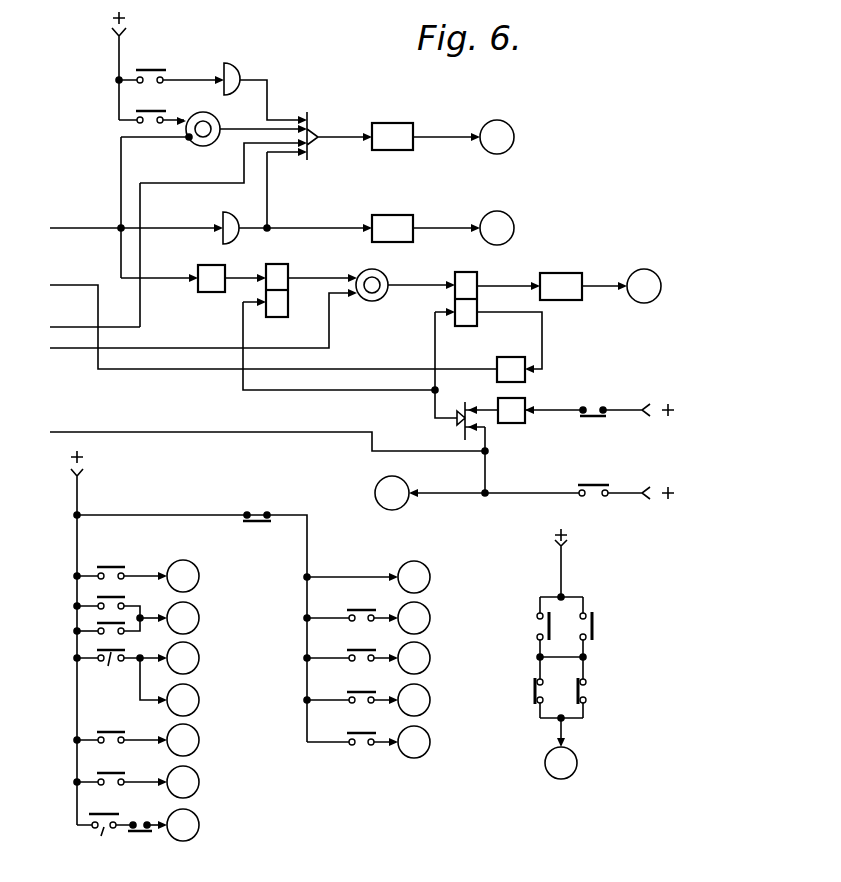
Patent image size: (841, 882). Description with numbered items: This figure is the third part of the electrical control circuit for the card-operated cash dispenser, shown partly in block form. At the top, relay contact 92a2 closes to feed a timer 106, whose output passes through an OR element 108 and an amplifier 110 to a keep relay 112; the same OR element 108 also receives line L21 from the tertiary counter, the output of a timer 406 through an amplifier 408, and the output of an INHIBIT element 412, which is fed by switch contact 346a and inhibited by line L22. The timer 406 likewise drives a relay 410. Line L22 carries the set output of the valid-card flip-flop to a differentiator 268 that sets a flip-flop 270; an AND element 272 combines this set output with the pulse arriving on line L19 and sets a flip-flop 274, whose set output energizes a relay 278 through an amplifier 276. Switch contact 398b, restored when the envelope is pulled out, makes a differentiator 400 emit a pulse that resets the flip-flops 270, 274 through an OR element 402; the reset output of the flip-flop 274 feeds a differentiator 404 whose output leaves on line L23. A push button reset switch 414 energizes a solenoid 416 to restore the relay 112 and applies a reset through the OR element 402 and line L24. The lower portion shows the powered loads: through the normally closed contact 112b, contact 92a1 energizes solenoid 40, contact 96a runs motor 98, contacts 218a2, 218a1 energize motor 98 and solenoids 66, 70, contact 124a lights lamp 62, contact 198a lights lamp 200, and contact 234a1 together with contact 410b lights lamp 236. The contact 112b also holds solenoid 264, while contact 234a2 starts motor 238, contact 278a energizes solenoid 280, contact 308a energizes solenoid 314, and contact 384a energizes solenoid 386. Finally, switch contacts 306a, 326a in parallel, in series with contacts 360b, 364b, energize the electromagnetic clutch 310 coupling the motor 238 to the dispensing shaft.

The relay contact 92a2 is at (187, 52).
The timer 106 is at (240, 65).
The switch contact 346a is at (174, 100).
The INHIBIT element 412 is at (197, 144).
The OR element 108 is at (316, 128).
The amplifier 110 is at (413, 123).
The keep relay 112 is at (510, 125).
The line L22 is at (77, 218).
The timer 406 is at (226, 213).
The amplifier 408 is at (418, 205).
The relay 410 is at (510, 216).
The line L23 is at (76, 281).
The differentiator 268 is at (208, 265).
The flip-flop 270 is at (288, 270).
The line L19 is at (77, 350).
The line L21 is at (74, 321).
The AND element 272 is at (384, 273).
The flip-flop 274 is at (477, 272).
The amplifier 276 is at (580, 273).
The relay 278 is at (656, 272).
The differentiator 404 is at (518, 349).
The OR element 402 is at (462, 426).
The differentiator 400 is at (510, 423).
The switch contact 398b is at (590, 406).
The line L24 is at (86, 415).
The solenoid 416 is at (375, 493).
The push button reset switch 414 is at (607, 488).
The relay contact 112b is at (273, 496).
The relay contact 92a1 is at (150, 554).
The solenoid 40 is at (199, 571).
The relay contact 96a is at (125, 595).
The motor 98 is at (199, 612).
The relay contact 218a2 is at (112, 631).
The relay contact 218a1 is at (119, 676).
The solenoid 66 is at (199, 658).
The solenoid 70 is at (199, 700).
The relay contact 124a is at (140, 718).
The lamp 62 is at (199, 740).
The relay contact 198a is at (135, 772).
The lamp 200 is at (199, 781).
The relay contact 234a1 is at (116, 841).
The relay contact 410b is at (142, 818).
The lamp 236 is at (199, 825).
The solenoid 264 is at (427, 565).
The relay contact 234a2 is at (393, 598).
The motor 238 is at (430, 618).
The relay contact 278a is at (375, 654).
The solenoid 280 is at (430, 658).
The switch contact 308a is at (378, 684).
The solenoid 314 is at (430, 700).
The switch contact 384a is at (375, 738).
The solenoid 386 is at (430, 742).
The switch contact 306a is at (540, 627).
The switch contact 326a is at (593, 623).
The switch contact 360b is at (535, 697).
The switch contact 364b is at (592, 690).
The electromagnetic clutch 310 is at (578, 757).